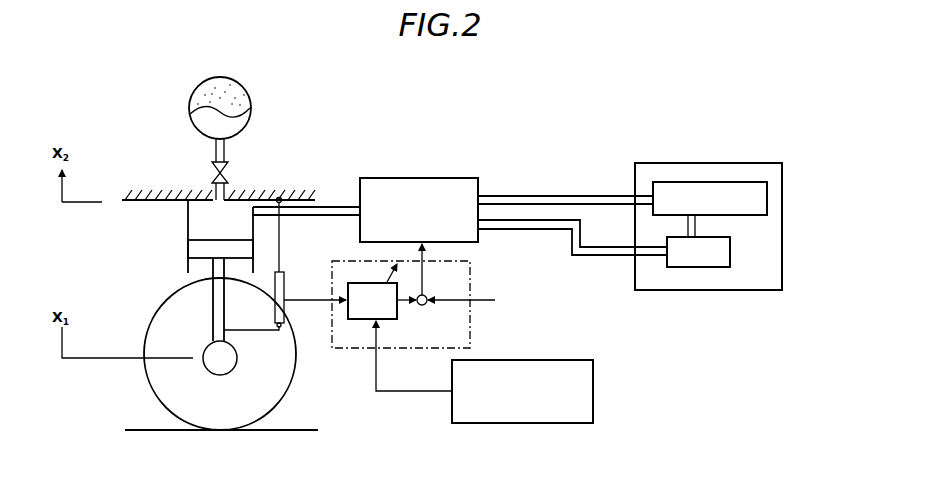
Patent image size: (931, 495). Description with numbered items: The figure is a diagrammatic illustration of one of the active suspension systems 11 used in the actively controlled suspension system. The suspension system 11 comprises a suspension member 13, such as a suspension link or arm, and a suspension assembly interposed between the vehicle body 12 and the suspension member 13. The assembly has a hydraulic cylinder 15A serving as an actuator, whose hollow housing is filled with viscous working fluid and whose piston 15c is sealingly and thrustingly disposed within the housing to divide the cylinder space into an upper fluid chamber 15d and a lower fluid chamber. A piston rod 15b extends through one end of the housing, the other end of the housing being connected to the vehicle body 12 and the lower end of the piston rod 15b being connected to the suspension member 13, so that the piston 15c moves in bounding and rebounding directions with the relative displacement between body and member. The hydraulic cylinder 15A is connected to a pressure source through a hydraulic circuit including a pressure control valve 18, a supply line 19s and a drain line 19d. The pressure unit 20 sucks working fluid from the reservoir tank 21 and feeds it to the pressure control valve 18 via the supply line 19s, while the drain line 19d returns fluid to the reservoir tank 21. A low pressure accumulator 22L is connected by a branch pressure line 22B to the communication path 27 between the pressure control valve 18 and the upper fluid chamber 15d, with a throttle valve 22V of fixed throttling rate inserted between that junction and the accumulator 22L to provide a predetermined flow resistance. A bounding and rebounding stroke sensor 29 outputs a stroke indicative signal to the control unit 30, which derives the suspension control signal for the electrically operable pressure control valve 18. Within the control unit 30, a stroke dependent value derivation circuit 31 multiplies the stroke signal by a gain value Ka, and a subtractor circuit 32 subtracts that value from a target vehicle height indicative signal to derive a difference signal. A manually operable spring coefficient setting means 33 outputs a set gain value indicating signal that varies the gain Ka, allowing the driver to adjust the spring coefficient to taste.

The suspension system 11 is at (316, 180).
The vehicle body 12 is at (143, 194).
The suspension member 13 is at (230, 358).
The hydraulic cylinder 15A is at (186, 241).
The piston rod 15b is at (213, 313).
The piston 15c is at (187, 262).
The upper fluid chamber 15d is at (187, 223).
The pressure control valve 18 is at (405, 177).
The supply line 19s is at (540, 194).
The drain line 19d is at (536, 231).
The pressure unit 20 is at (710, 209).
The reservoir tank 21 is at (698, 252).
The low pressure accumulator 22L is at (247, 98).
The branch pressure line 22B is at (214, 152).
The throttle valve 22V is at (227, 171).
The communication path 27 is at (323, 219).
The stroke sensor 29 is at (284, 291).
The control unit 30 is at (402, 298).
The bounding and rebounding stroke dependent value derivation circuit 31 is at (355, 340).
The subtractor circuit 32 is at (425, 295).
The spring coefficient setting means 33 is at (514, 424).